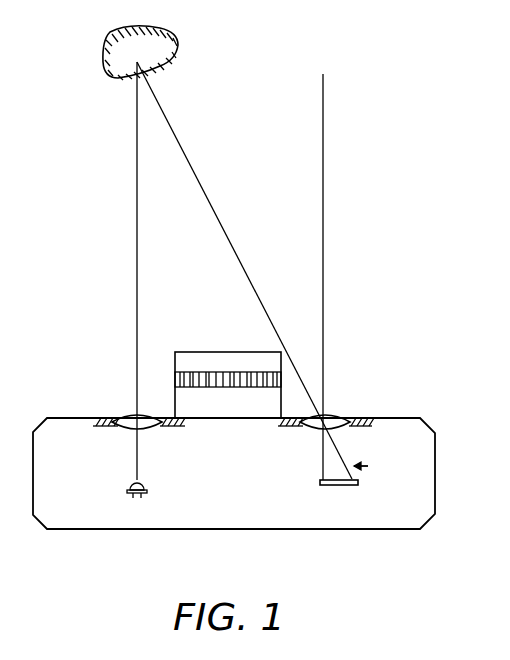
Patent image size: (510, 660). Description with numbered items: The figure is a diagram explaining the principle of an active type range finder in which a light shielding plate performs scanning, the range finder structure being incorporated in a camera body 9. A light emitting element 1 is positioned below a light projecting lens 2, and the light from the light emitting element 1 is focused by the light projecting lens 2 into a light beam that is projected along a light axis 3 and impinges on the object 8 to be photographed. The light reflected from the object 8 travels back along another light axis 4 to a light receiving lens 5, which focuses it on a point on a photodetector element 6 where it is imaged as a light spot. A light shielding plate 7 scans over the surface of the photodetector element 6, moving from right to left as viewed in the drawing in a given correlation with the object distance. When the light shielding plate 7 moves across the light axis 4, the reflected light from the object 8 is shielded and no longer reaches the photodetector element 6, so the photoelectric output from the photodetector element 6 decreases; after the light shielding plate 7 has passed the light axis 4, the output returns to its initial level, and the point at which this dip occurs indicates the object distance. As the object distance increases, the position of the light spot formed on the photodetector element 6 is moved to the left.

The light emitting element 1 is at (146, 483).
The light projecting lens 2 is at (130, 430).
The light axis 3 is at (138, 273).
The light axis 4 is at (194, 170).
The light receiving lens 5 is at (342, 412).
The photodetector element 6 is at (340, 486).
The light shielding plate 7 is at (362, 472).
The object 8 is at (172, 38).
The camera body 9 is at (437, 460).